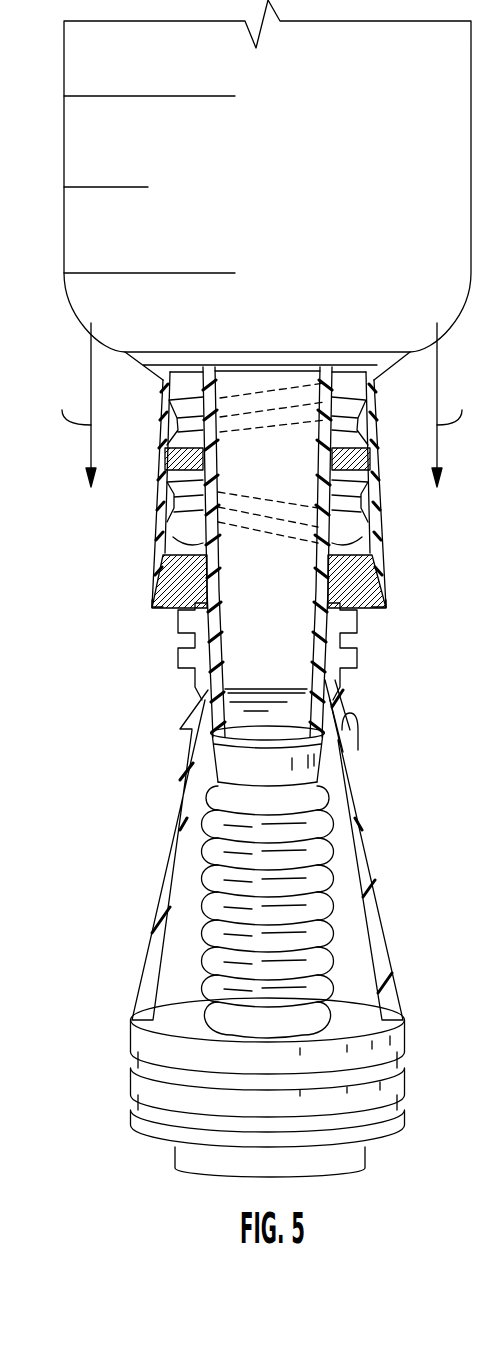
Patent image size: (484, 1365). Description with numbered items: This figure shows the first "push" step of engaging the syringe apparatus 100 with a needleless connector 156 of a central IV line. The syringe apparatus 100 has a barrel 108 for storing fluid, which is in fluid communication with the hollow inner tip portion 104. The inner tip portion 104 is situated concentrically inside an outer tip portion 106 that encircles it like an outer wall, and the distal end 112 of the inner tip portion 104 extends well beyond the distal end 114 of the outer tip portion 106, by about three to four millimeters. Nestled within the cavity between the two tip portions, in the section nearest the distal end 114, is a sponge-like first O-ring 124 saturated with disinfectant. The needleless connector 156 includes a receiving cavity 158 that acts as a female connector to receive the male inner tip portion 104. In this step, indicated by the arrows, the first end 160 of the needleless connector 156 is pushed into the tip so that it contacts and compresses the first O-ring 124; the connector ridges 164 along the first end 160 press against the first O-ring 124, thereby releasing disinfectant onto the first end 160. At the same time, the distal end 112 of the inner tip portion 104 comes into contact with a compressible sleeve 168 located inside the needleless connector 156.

The syringe apparatus 100 is at (243, 588).
The barrel 108 is at (64, 155).
The inner tip portion 104 is at (172, 542).
The outer tip portion 106 is at (375, 493).
The distal end of the outer tip portion 114 is at (152, 607).
The first O-ring 124 is at (377, 567).
The first end of the needleless connector 160 is at (378, 572).
The connector ridges 164 is at (358, 668).
The distal end of the inner tip portion 112 is at (180, 728).
The compressible sleeve 168 is at (230, 762).
The receiving cavity 158 is at (330, 787).
The needleless connector 156 is at (286, 850).